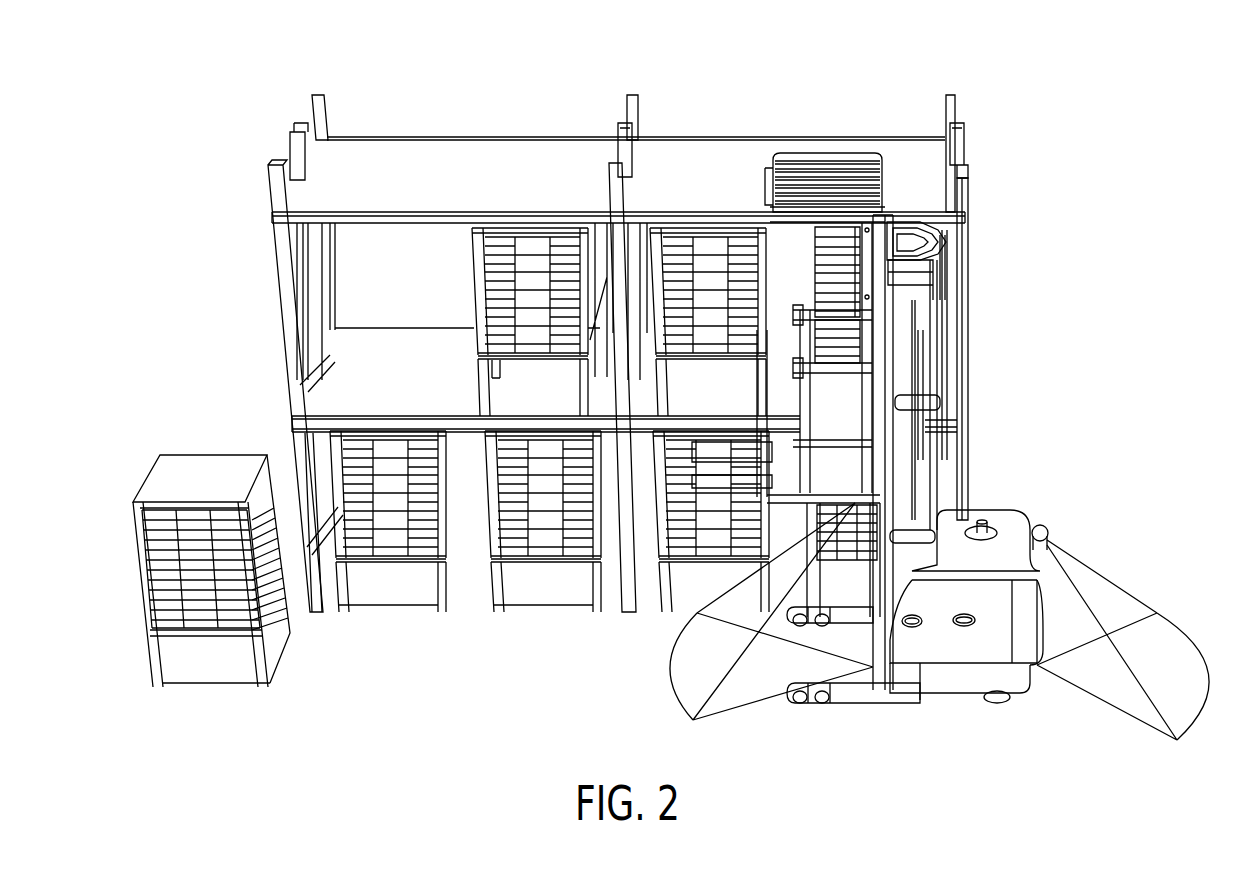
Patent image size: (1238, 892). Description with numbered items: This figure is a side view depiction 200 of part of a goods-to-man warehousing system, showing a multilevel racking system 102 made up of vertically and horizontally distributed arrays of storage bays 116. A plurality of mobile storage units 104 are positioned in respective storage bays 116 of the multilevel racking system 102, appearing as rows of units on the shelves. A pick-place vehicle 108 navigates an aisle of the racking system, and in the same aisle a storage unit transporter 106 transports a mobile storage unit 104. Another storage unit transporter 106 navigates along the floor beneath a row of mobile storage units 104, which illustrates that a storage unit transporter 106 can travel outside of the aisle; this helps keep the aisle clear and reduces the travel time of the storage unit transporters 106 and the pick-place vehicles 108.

The side view depiction 200 is at (156, 123).
The multilevel racking system 102 is at (965, 270).
The mobile storage unit 104 is at (528, 247).
The storage unit transporter 106 is at (278, 640).
The pick-place vehicle 108 is at (965, 678).
The storage bay 116 is at (398, 357).